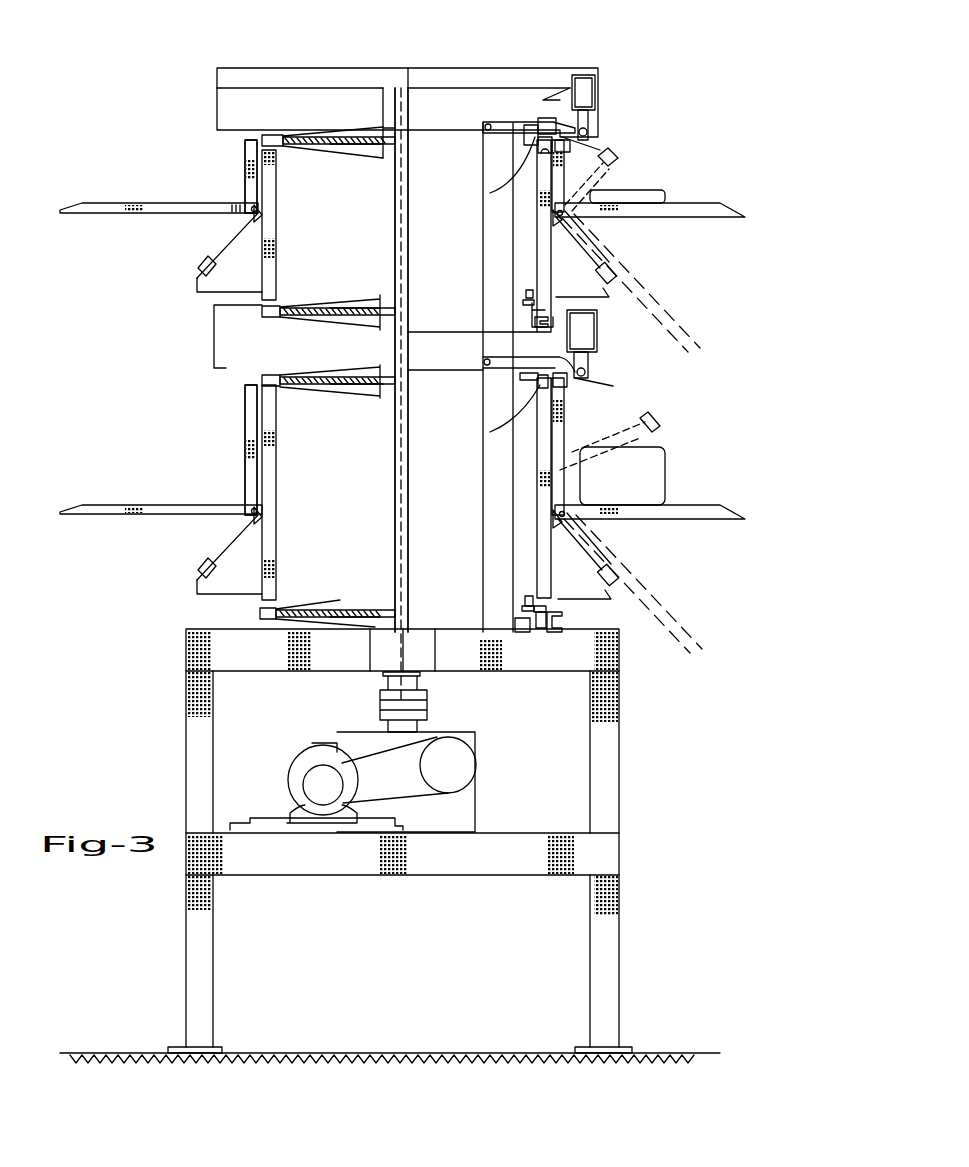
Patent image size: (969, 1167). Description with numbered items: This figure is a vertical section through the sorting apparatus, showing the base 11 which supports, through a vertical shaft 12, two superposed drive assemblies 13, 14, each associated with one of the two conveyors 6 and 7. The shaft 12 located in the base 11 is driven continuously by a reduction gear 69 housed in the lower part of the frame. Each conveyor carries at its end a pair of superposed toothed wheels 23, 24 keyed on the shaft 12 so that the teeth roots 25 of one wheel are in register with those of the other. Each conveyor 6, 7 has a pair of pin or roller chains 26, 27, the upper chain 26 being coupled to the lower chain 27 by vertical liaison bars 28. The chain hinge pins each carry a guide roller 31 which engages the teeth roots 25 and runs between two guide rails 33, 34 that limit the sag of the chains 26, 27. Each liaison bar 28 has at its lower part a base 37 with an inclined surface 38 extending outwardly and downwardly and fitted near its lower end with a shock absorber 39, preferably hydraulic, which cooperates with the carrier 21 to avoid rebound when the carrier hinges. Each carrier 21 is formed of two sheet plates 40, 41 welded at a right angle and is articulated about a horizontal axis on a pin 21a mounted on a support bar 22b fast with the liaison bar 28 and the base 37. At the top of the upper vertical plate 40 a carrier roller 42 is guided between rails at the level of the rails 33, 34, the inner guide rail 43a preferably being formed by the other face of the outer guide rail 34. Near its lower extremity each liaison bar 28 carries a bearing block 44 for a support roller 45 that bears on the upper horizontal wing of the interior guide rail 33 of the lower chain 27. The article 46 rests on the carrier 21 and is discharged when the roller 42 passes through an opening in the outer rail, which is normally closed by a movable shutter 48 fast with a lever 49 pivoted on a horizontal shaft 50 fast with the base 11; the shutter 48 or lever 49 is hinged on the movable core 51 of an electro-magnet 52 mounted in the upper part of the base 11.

The conveyor 6 is at (186, 182).
The conveyor 7 is at (175, 480).
The base 11 is at (390, 52).
The vertical shaft 12 is at (396, 242).
The drive assembly 13 is at (336, 147).
The drive assembly 14 is at (312, 388).
The carrier 21 is at (92, 214).
The pin 21a is at (570, 218).
The support bar 22b is at (262, 208).
The toothed wheel 23 is at (362, 148).
The toothed wheel 24 is at (322, 306).
The teeth roots 25 is at (270, 135).
The chain 26 is at (484, 366).
The chain 27 is at (532, 316).
The liaison bar 28 is at (276, 248).
The guide roller 31 is at (540, 150).
The guide rail 33 is at (524, 132).
The guide rail 34 is at (545, 130).
The base 37 is at (192, 293).
The inclined surface 38 is at (235, 236).
The shock absorber 39 is at (198, 270).
The upper vertical plate 40 is at (244, 400).
The horizontal plate 41 is at (690, 204).
The carrier roller 42 is at (568, 152).
The inner guide rail 43a is at (492, 196).
The bearing block 44 is at (526, 292).
The support roller 45 is at (523, 303).
The article 46 is at (660, 192).
The movable shutter 48 is at (600, 138).
The lever 49 is at (485, 120).
The horizontal shaft 50 is at (484, 128).
The movable core 51 is at (590, 115).
The electro-magnet 52 is at (585, 78).
The reduction gear 69 is at (318, 778).